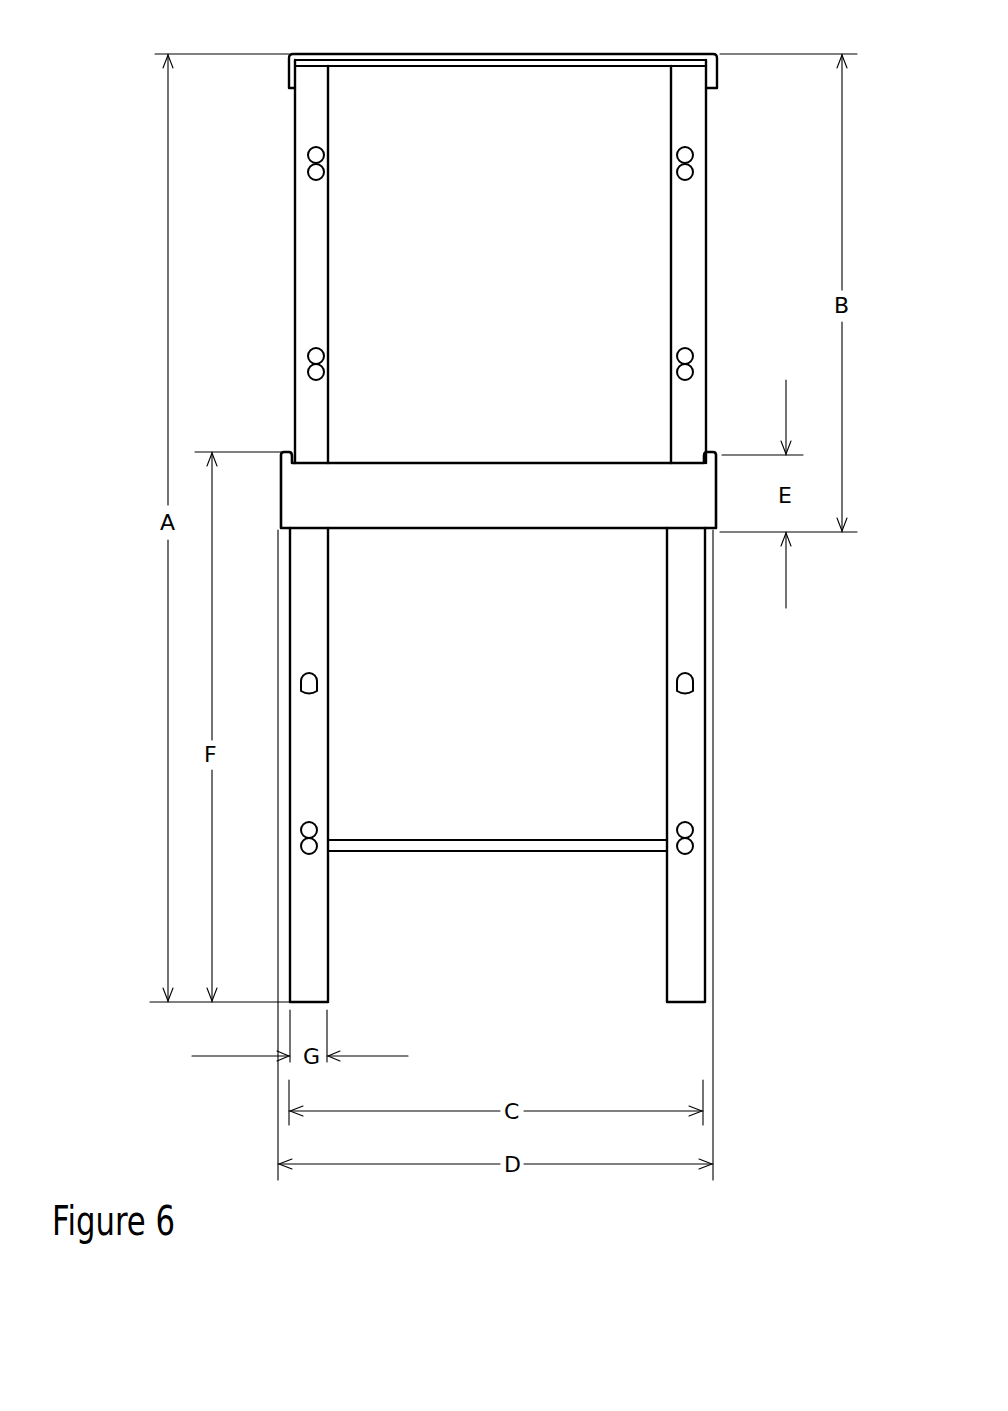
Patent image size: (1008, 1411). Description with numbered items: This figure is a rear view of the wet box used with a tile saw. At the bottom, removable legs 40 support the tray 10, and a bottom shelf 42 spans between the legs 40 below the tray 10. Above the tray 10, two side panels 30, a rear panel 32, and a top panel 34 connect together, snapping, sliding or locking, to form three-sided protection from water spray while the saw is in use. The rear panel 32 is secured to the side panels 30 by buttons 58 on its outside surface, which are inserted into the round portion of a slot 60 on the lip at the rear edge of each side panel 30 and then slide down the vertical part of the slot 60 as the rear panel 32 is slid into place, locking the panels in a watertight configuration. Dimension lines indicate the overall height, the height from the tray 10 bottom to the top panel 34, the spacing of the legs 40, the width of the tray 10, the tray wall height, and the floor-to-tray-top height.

The tray 10 is at (318, 500).
The side panels 30 is at (298, 228).
The rear panel 32 is at (637, 200).
The top panel 34 is at (541, 62).
The removable legs 40 is at (689, 791).
The bottom shelf 42 is at (458, 846).
The buttons 58 is at (309, 371).
The slot 60 is at (309, 357).